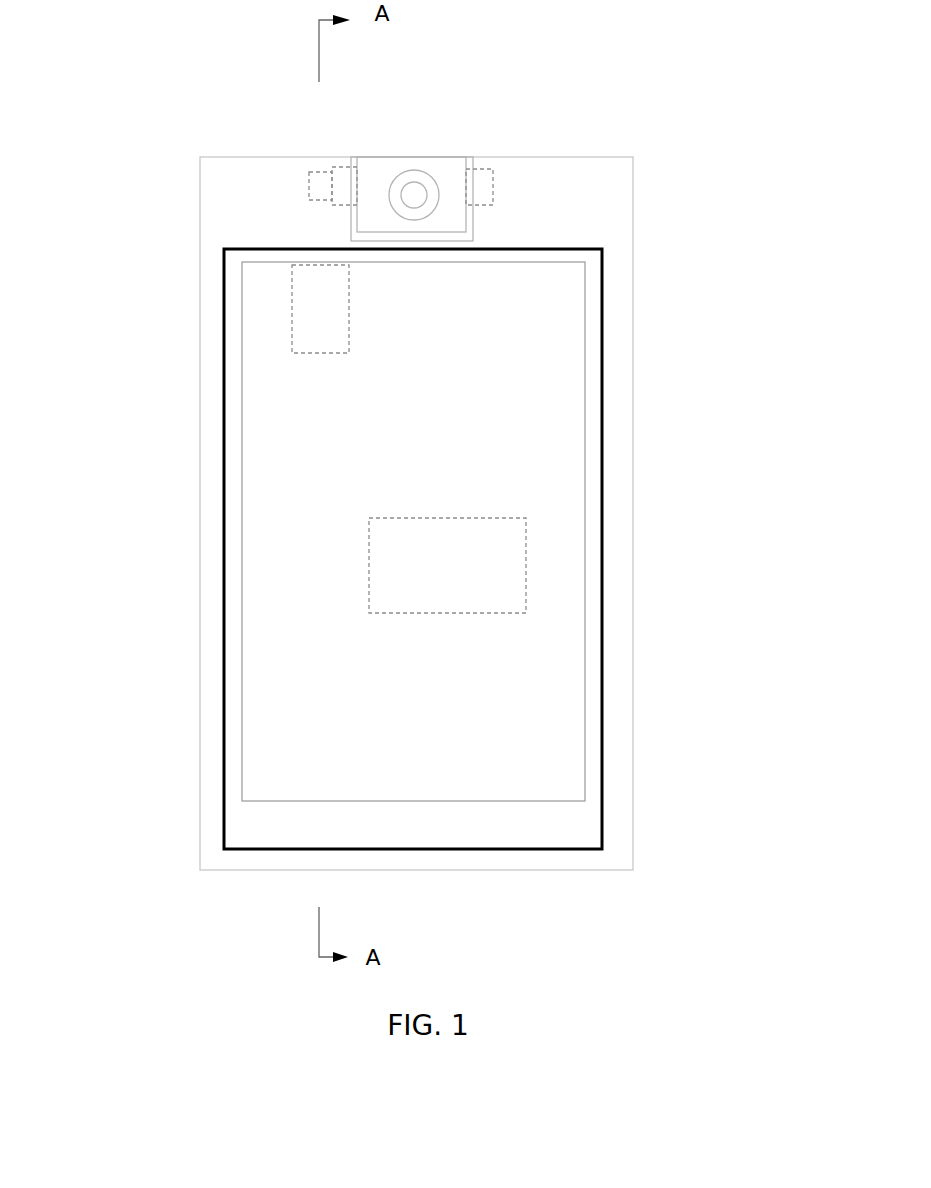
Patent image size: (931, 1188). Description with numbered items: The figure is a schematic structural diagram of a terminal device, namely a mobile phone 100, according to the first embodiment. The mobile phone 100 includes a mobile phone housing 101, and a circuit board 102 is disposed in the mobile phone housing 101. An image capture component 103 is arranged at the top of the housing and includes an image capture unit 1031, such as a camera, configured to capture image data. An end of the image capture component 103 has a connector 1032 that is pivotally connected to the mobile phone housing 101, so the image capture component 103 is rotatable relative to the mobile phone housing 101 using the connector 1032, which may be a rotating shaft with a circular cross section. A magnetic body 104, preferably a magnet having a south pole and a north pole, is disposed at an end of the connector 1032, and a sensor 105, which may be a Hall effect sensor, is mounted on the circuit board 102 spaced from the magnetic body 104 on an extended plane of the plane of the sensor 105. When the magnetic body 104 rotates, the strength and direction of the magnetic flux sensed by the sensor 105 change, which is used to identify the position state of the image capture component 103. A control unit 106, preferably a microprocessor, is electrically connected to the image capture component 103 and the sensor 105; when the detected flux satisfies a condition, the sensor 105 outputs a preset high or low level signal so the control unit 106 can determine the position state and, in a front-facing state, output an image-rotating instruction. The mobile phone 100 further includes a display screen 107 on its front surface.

The mobile phone 100 is at (158, 421).
The mobile phone housing 101 is at (595, 219).
The circuit board 102 is at (601, 407).
The image capture component 103 is at (451, 132).
The image capture unit 1031 is at (415, 175).
The connector 1032 is at (485, 186).
The magnetic body 104 is at (321, 186).
The sensor 105 is at (319, 307).
The control unit 106 is at (494, 570).
The display screen 107 is at (585, 662).